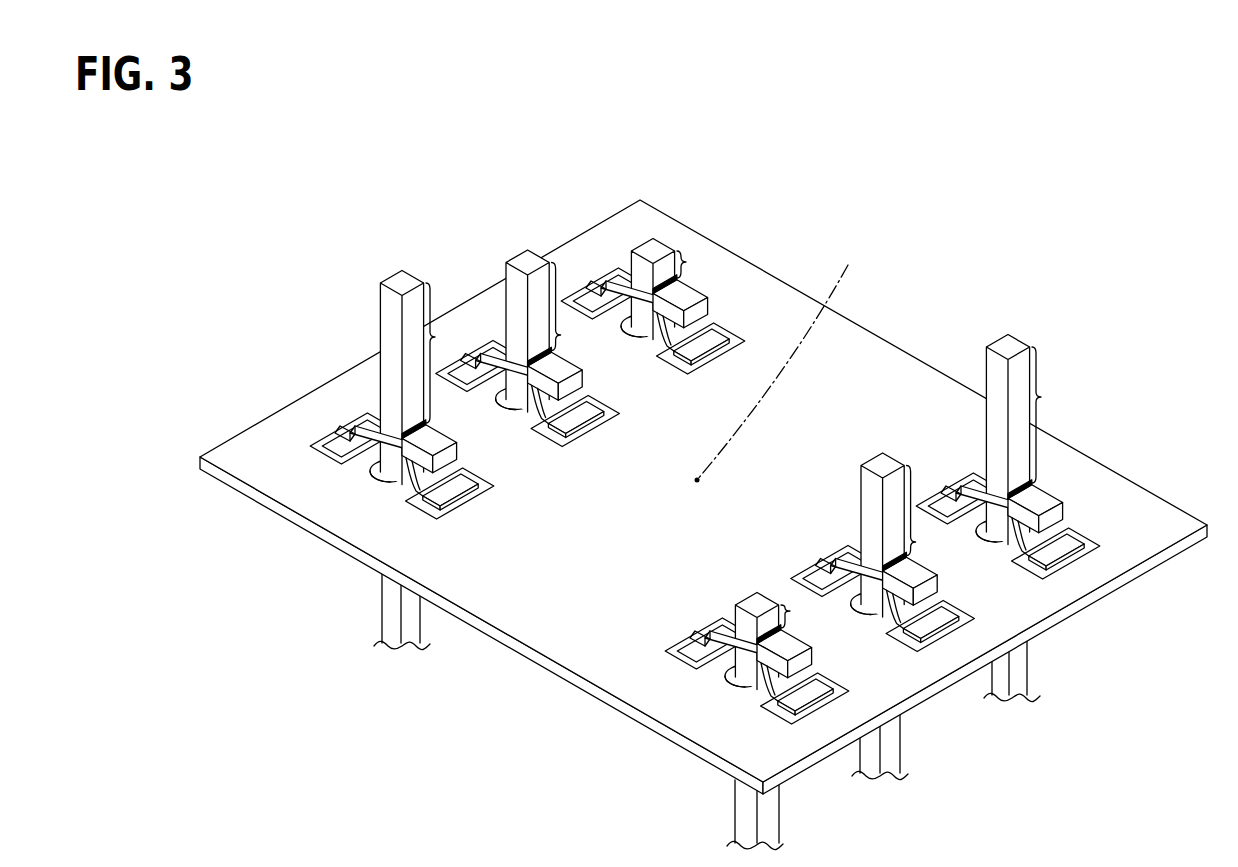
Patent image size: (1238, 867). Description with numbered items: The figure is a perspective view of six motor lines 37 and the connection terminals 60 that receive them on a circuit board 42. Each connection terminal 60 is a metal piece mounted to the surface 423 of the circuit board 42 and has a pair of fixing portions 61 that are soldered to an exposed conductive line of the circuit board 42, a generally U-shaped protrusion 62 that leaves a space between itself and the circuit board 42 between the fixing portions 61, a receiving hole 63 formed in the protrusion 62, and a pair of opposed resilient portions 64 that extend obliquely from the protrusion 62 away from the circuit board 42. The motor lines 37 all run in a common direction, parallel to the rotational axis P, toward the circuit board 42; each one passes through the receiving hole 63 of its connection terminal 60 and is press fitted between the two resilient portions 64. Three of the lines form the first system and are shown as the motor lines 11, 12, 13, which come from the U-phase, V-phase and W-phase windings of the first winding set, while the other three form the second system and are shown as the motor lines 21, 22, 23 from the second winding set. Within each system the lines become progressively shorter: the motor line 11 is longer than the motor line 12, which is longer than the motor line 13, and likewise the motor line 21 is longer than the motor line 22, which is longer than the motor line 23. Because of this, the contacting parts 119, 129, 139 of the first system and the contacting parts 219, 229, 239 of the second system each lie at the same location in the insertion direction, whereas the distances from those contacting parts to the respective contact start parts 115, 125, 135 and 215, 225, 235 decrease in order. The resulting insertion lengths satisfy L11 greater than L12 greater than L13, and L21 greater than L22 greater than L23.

The motor line 11 is at (374, 403).
The motor line 12 is at (552, 294).
The motor line 13 is at (677, 232).
The motor line 21 is at (1026, 391).
The motor line 22 is at (897, 515).
The motor line 23 is at (771, 616).
The motor line 37 is at (671, 407).
The circuit board 42 is at (703, 525).
The surface 423 is at (527, 615).
The connection terminal 60 is at (598, 287).
The fixing portion 61 is at (480, 497).
The protrusion 62 is at (410, 495).
The receiving hole 63 is at (420, 457).
The resilient portion 64 is at (377, 414).
The contact start part 115 is at (427, 283).
The contacting part 119 is at (428, 425).
The contact start part 125 is at (549, 272).
The contacting part 129 is at (552, 353).
The contact start part 135 is at (668, 246).
The contacting part 139 is at (676, 280).
The contact start part 215 is at (1032, 348).
The contacting part 219 is at (1028, 485).
The contact start part 225 is at (908, 478).
The contacting part 229 is at (928, 557).
The contact start part 235 is at (780, 596).
The contacting part 239 is at (784, 632).
The insertion length L11 is at (450, 353).
The insertion length L12 is at (576, 307).
The insertion length L13 is at (701, 261).
The insertion length L21 is at (1057, 415).
The insertion length L22 is at (935, 511).
The insertion length L23 is at (811, 612).
The rotational axis P is at (775, 358).